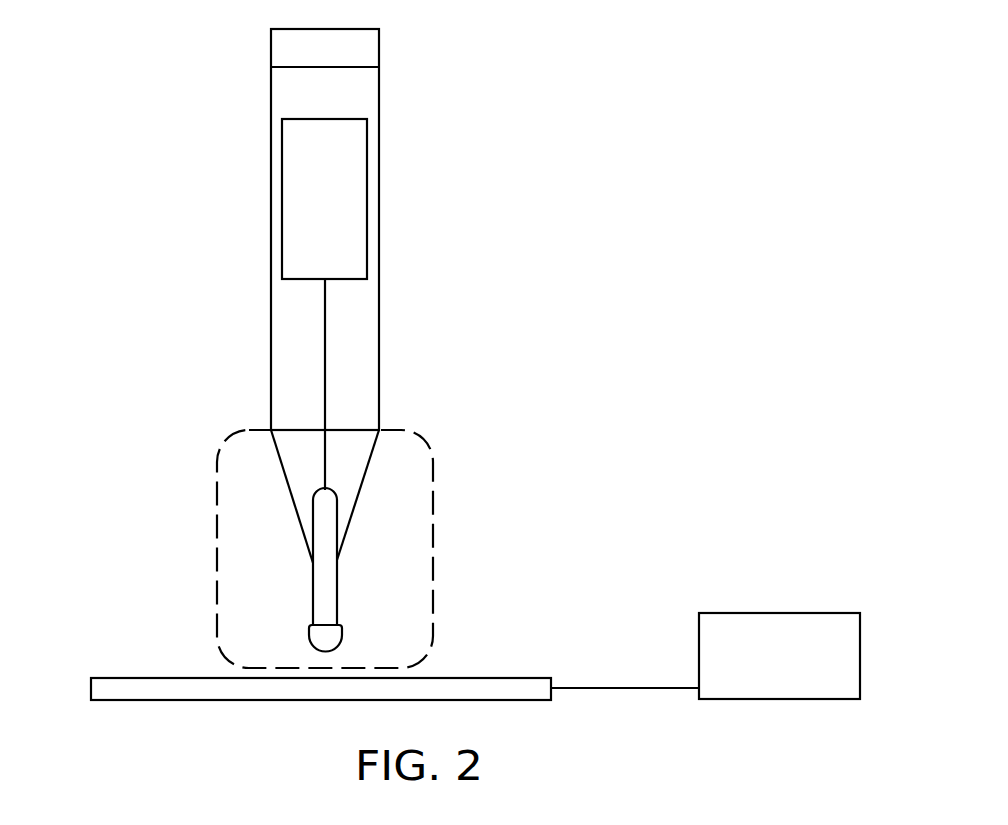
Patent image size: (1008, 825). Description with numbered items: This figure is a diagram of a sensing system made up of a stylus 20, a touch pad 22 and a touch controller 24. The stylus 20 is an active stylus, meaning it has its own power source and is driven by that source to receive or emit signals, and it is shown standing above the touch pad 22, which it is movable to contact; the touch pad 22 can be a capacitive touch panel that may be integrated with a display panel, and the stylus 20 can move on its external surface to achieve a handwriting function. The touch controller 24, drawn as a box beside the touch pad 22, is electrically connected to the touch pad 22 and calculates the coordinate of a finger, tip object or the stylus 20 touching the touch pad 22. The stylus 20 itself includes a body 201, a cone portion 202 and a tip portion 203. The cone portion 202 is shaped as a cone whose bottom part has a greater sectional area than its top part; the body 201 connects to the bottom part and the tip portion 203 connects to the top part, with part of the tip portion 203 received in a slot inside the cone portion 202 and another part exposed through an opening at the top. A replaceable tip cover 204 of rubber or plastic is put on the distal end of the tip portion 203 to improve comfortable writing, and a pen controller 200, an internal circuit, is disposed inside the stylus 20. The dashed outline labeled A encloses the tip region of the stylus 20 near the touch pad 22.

The stylus 20 is at (271, 110).
The pen controller 200 is at (357, 180).
The body 201 is at (365, 288).
The cone portion 202 is at (302, 478).
The tip portion 203 is at (323, 597).
The tip cover 204 is at (325, 635).
The touch pad 22 is at (90, 686).
The touch controller 24 is at (860, 632).
The tip region A is at (435, 523).